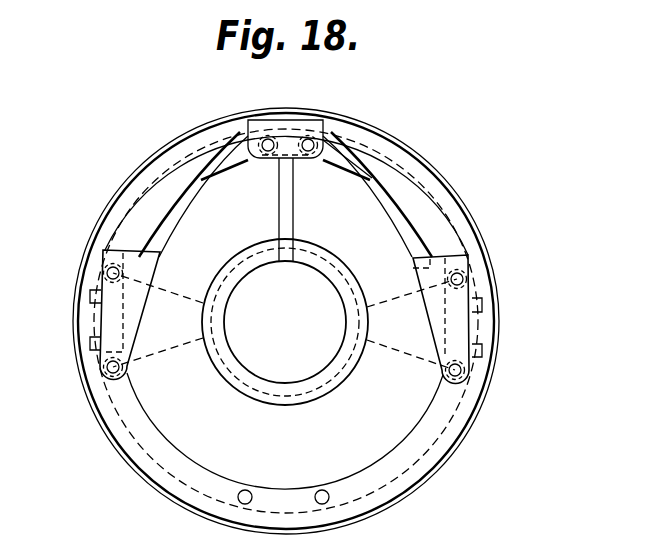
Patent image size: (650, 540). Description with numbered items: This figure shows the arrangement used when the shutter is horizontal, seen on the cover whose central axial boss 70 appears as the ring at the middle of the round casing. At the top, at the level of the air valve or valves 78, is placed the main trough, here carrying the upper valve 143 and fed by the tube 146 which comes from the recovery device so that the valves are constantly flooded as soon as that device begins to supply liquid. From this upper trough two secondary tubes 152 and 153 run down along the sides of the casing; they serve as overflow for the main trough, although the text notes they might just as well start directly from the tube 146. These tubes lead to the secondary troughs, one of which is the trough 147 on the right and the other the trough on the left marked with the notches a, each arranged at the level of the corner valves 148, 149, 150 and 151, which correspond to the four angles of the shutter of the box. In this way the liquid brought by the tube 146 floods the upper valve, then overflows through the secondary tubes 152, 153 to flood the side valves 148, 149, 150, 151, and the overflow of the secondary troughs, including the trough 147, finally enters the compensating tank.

The axial boss 70 is at (274, 392).
The ball 78 is at (333, 133).
The valve 143 is at (309, 132).
The tube 146 is at (280, 220).
The secondary trough 147 is at (465, 333).
The valve 148 is at (108, 272).
The valve 149 is at (108, 368).
The valve 150 is at (463, 282).
The valve 151 is at (463, 375).
The secondary tube 152 is at (171, 218).
The secondary tube 153 is at (397, 211).
The notch a is at (272, 323).